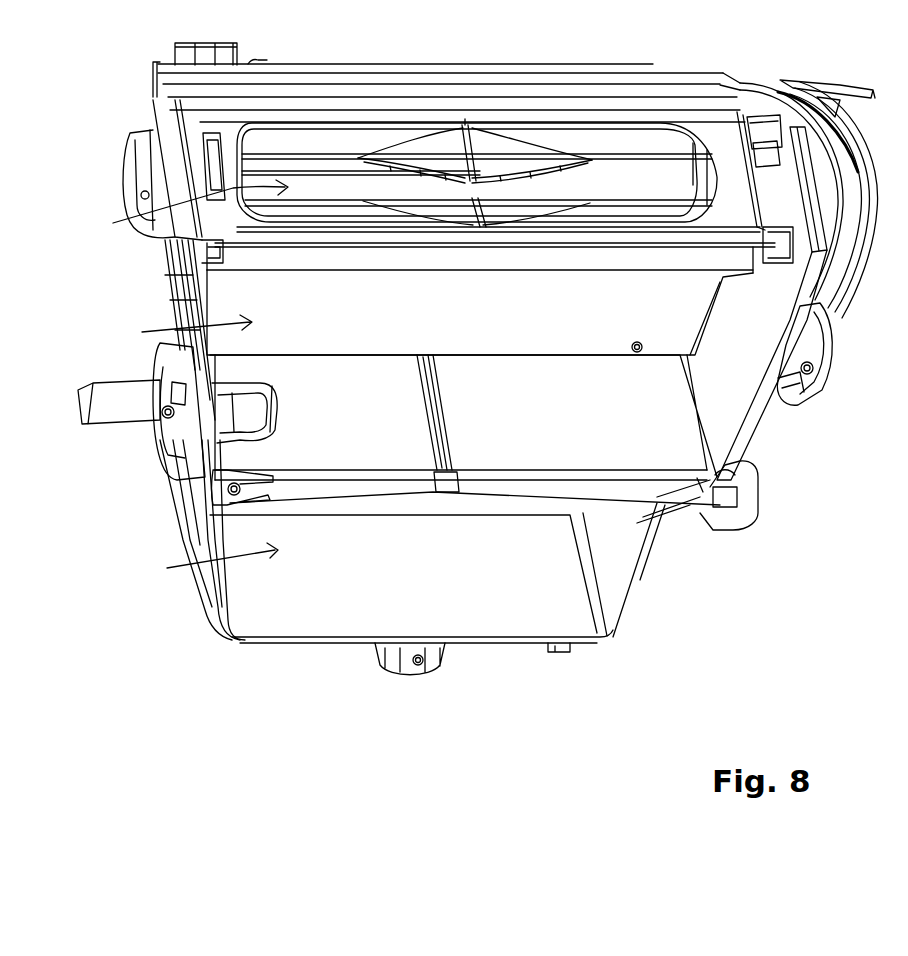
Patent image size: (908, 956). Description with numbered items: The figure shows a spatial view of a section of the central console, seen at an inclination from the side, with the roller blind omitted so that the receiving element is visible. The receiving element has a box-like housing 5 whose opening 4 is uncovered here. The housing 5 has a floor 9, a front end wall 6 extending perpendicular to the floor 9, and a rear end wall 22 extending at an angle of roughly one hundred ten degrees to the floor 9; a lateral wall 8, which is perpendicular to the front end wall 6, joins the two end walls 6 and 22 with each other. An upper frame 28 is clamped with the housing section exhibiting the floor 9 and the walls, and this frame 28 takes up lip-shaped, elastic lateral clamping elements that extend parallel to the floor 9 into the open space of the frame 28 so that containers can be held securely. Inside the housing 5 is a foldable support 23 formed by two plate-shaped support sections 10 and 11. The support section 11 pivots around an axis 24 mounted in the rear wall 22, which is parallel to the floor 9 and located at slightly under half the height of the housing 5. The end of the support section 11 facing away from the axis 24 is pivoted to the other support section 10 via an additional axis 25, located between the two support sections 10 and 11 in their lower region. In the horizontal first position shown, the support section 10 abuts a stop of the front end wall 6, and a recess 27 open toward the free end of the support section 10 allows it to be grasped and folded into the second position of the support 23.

The upper frame 28 is at (200, 125).
The opening 4 is at (184, 382).
The front end wall 6 is at (207, 293).
The lateral wall 8 is at (687, 307).
The recess 27 is at (230, 420).
The support section 10 is at (263, 453).
The foldable support 23 is at (486, 512).
The axis 25 is at (445, 487).
The floor 9 is at (547, 617).
The support section 11 is at (583, 450).
The axis 24 is at (720, 490).
The rear end wall 22 is at (773, 378).
The housing 5 is at (791, 445).